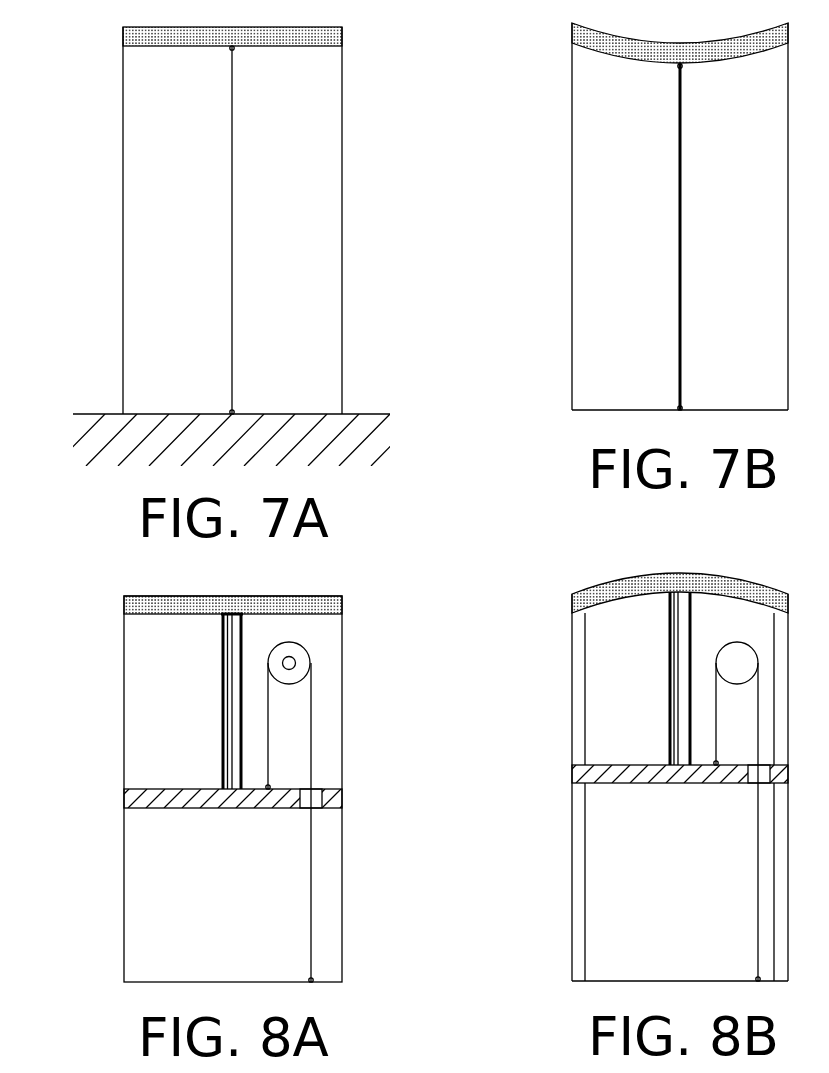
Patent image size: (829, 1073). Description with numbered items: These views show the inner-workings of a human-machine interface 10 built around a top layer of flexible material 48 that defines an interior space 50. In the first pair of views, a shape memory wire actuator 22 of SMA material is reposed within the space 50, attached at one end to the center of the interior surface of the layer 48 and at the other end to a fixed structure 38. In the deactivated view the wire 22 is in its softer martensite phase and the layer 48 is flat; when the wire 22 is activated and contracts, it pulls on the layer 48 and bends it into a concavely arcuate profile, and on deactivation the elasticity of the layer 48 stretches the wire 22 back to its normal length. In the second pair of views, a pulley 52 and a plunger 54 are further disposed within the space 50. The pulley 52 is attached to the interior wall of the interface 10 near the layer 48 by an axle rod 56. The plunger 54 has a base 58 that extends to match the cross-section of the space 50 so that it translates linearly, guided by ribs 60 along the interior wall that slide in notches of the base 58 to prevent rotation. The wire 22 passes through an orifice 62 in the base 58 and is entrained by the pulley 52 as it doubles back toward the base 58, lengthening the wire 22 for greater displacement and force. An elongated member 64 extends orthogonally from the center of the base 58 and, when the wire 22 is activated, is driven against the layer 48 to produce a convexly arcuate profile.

In FIG. 7A, the interface 10 is at (80, 52).
In FIG. 8A, the interface 10 is at (76, 646).
In FIG. 7A, the shape memory wire actuator 22 is at (232, 168).
In FIG. 7B, the shape memory wire actuator 22 is at (680, 180).
In FIG. 8A, the shape memory wire actuator 22 is at (312, 740).
In FIG. 8B, the shape memory wire actuator 22 is at (737, 822).
In FIG. 7A, the fixed structure 38 is at (375, 414).
In FIG. 7A, the layer of flexible material 48 is at (342, 32).
In FIG. 7B, the layer of flexible material 48 is at (572, 29).
In FIG. 8A, the layer of flexible material 48 is at (342, 600).
In FIG. 8B, the layer of flexible material 48 is at (680, 593).
In FIG. 7A, the interior space 50 is at (270, 128).
In FIG. 7B, the interior space 50 is at (466, 112).
In FIG. 8A, the pulley 52 is at (300, 682).
In FIG. 8B, the pulley 52 is at (737, 663).
In FIG. 8B, the plunger 54 is at (648, 818).
In FIG. 8A, the axle rod 56 is at (296, 661).
In FIG. 8A, the base 58 is at (234, 798).
In FIG. 8B, the base 58 is at (603, 784).
In FIG. 8B, the ribs 60 is at (578, 733).
In FIG. 8A, the orifice 62 is at (316, 808).
In FIG. 8B, the orifice 62 is at (759, 774).
In FIG. 8A, the elongated member 64 is at (232, 701).
In FIG. 8B, the elongated member 64 is at (668, 667).